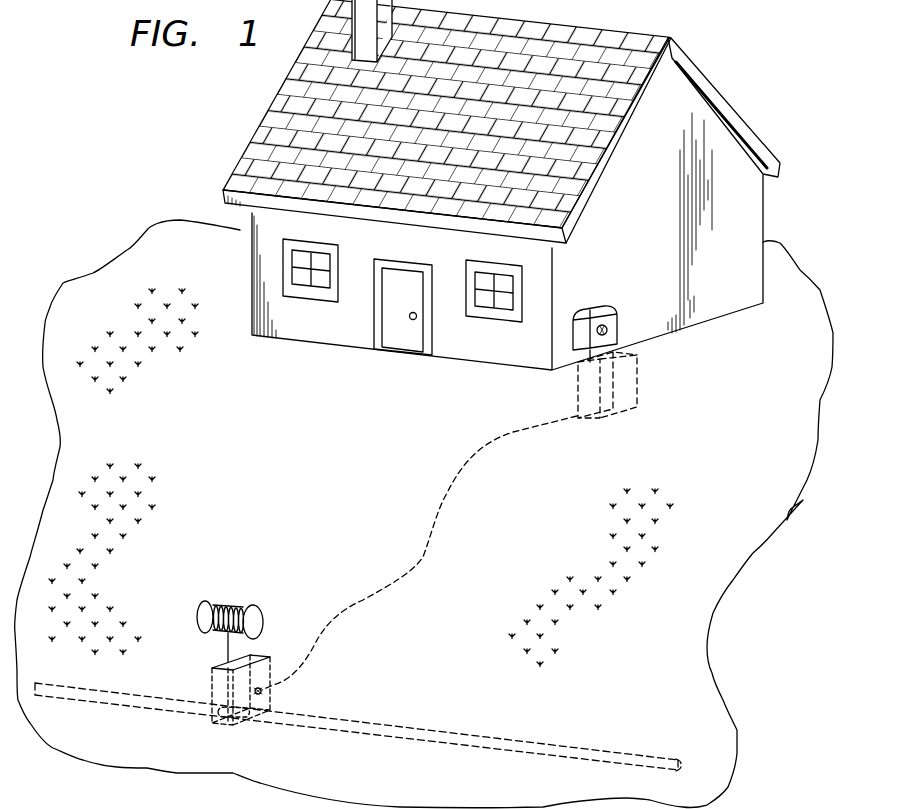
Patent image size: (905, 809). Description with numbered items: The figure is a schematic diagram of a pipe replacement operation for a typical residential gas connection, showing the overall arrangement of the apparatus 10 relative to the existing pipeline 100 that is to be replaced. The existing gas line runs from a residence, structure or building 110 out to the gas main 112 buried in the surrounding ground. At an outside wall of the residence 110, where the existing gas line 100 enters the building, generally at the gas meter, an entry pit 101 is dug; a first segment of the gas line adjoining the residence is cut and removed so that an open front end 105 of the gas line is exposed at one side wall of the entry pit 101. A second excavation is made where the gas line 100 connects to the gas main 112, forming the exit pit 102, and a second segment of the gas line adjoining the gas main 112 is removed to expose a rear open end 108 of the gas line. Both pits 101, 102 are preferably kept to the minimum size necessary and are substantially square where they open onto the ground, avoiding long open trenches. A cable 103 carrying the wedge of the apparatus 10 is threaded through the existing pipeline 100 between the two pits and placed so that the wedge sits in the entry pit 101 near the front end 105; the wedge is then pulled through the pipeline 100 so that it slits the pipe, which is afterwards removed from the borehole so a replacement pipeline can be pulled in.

The apparatus 10 is at (240, 593).
The existing pipeline 100 is at (432, 530).
The entry pit 101 is at (623, 378).
The exit pit 102 is at (262, 655).
The cable 103 is at (225, 648).
The front end 105 is at (588, 426).
The rear open end 108 is at (273, 697).
The residence 110 is at (755, 212).
The gas main 112 is at (415, 722).